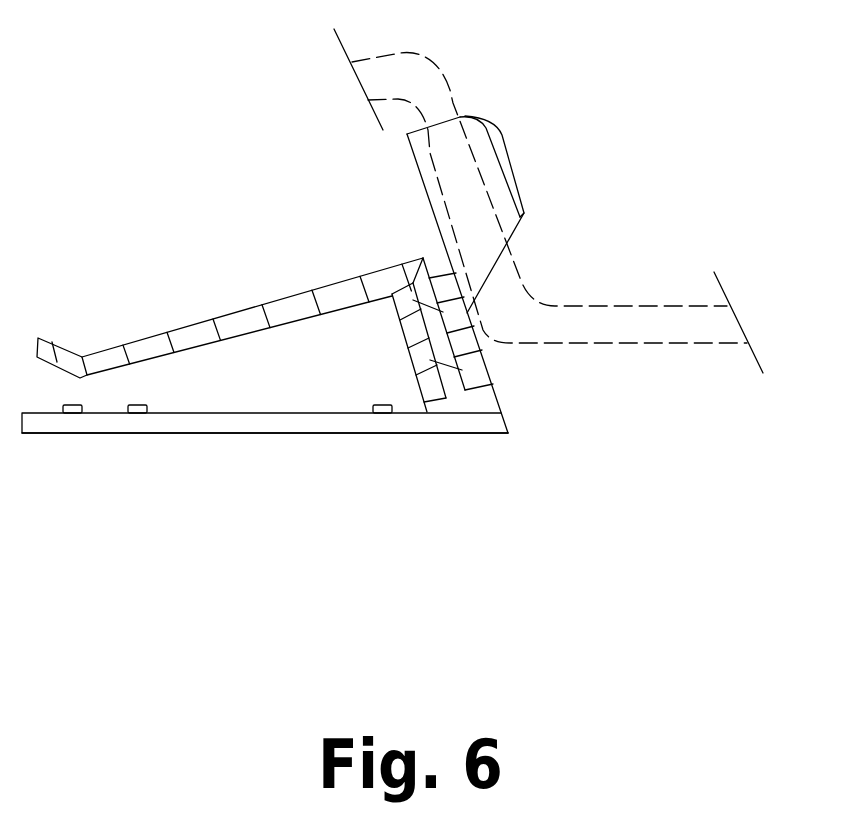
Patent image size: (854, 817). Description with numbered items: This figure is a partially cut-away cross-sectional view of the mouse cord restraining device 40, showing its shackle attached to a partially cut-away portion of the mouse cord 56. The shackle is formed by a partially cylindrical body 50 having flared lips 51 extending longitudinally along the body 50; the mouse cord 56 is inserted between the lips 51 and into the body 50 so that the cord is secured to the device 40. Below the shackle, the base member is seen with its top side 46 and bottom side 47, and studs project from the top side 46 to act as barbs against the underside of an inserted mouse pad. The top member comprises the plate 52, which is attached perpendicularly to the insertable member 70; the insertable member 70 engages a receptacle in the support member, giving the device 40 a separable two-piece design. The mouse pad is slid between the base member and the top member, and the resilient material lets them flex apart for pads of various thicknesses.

The device 40 is at (690, 165).
The top side 46 is at (267, 413).
The bottom side 47 is at (368, 433).
The partially cylindrical body 50 is at (412, 155).
The flared lips 51 is at (508, 172).
The plate 52 is at (162, 333).
The mouse cord 56 is at (517, 277).
The insertable member 70 is at (462, 392).